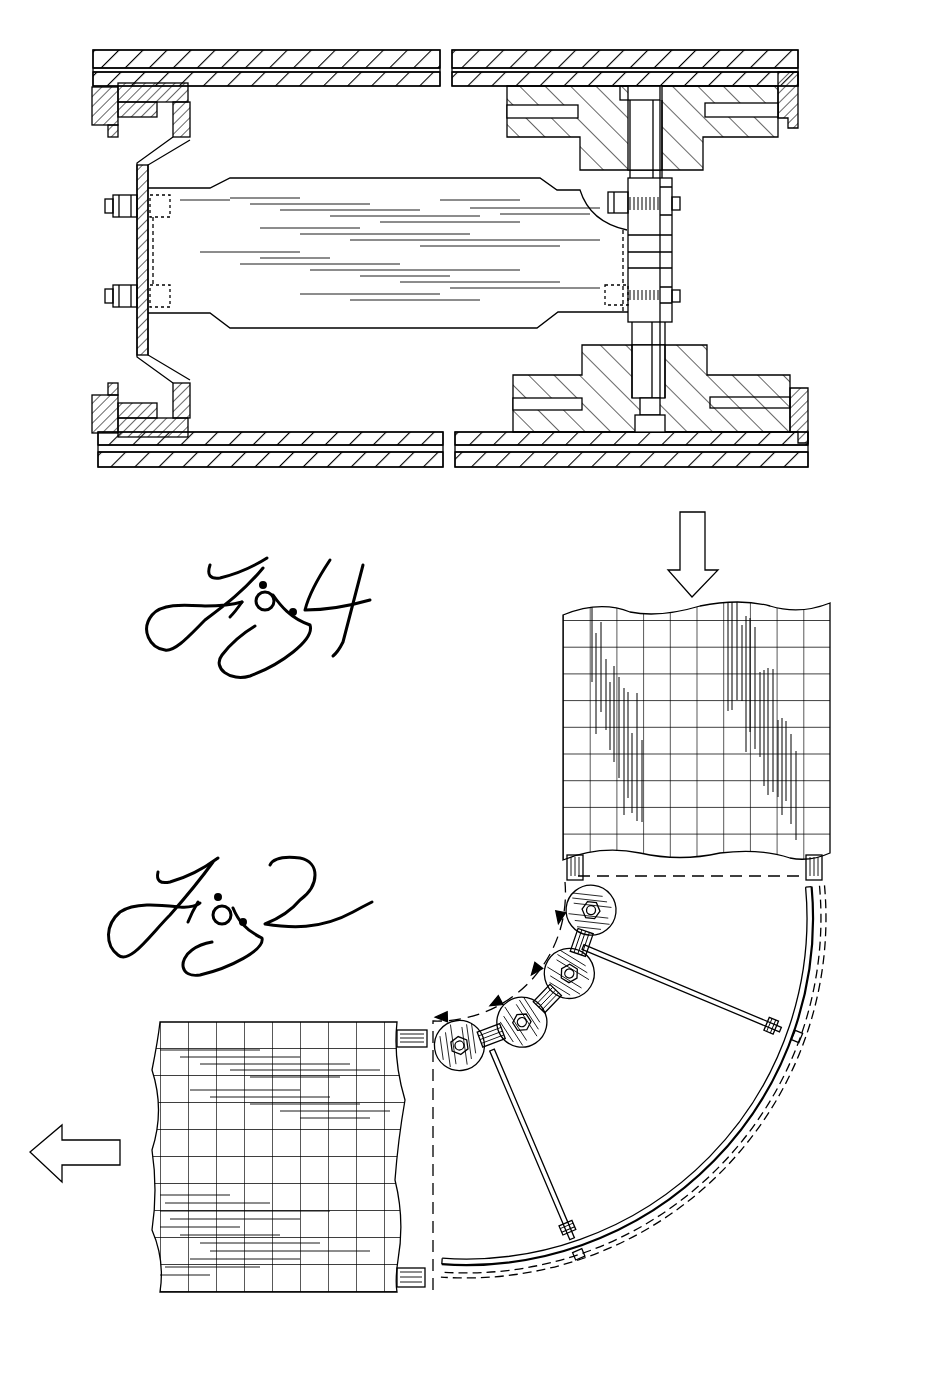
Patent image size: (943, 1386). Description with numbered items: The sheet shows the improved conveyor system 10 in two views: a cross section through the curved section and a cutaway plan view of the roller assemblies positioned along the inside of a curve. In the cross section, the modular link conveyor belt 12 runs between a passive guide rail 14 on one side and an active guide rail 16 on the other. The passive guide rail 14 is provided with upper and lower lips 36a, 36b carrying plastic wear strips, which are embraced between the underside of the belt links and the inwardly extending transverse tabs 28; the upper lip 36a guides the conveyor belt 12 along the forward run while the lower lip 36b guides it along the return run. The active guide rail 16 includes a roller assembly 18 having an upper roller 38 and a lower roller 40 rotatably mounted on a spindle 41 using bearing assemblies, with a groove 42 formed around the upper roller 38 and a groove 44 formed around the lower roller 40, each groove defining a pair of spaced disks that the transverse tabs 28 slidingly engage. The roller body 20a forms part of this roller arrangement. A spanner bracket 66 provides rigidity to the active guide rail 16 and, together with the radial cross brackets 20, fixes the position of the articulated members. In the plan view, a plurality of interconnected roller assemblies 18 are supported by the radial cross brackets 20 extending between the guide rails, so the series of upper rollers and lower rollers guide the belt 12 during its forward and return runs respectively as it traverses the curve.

In FIG. 4, the conveyor system 10 is at (757, 46).
In FIG. 2, the conveyor system 10 is at (431, 963).
In FIG. 4, the conveyor belt 12 is at (503, 52).
In FIG. 2, the conveyor belt 12 is at (570, 710).
In FIG. 4, the passive guide rail 14 is at (114, 342).
In FIG. 2, the passive guide rail 14 is at (822, 880).
In FIG. 4, the active guide rail 16 is at (743, 322).
In FIG. 2, the active guide rail 16 is at (542, 990).
In FIG. 4, the roller assembly 18 is at (699, 249).
In FIG. 2, the roller assembly 18 is at (548, 1043).
In FIG. 2, the radial cross bracket 20 is at (658, 976).
In FIG. 4, the roller body 20a is at (305, 200).
In FIG. 4, the transverse tab 28 is at (792, 110).
In FIG. 4, the upper lip 36a is at (150, 98).
In FIG. 4, the lower lip 36b is at (155, 432).
In FIG. 4, the upper roller 38 is at (704, 158).
In FIG. 4, the lower roller 40 is at (745, 376).
In FIG. 4, the spindle 41 is at (630, 333).
In FIG. 4, the groove 42 is at (520, 112).
In FIG. 4, the groove 44 is at (507, 402).
In FIG. 4, the spanner bracket 66 is at (677, 272).